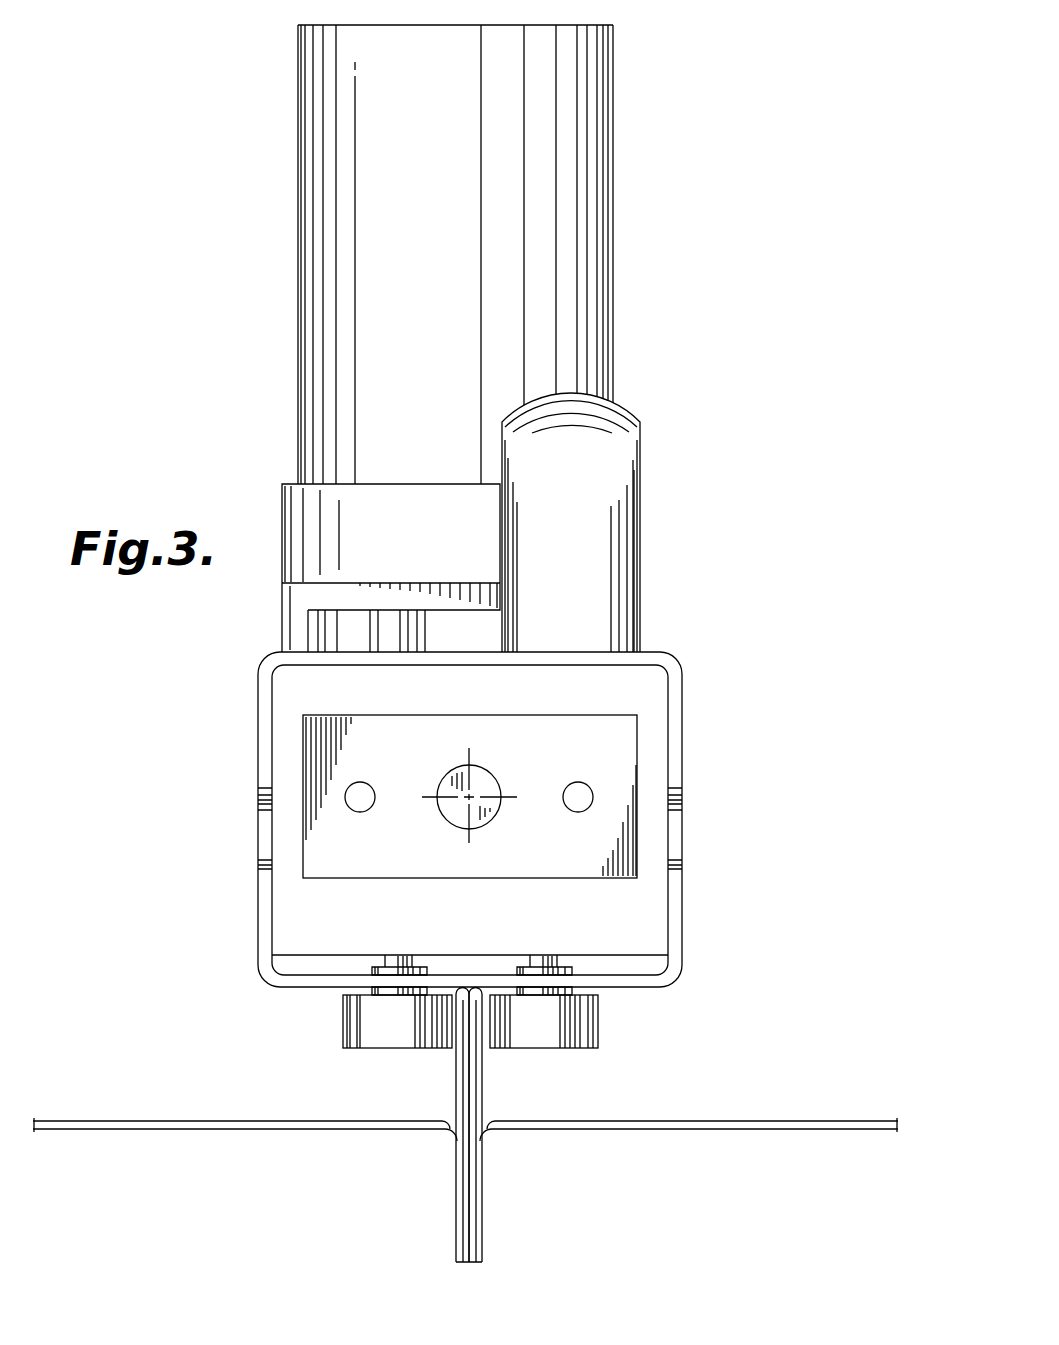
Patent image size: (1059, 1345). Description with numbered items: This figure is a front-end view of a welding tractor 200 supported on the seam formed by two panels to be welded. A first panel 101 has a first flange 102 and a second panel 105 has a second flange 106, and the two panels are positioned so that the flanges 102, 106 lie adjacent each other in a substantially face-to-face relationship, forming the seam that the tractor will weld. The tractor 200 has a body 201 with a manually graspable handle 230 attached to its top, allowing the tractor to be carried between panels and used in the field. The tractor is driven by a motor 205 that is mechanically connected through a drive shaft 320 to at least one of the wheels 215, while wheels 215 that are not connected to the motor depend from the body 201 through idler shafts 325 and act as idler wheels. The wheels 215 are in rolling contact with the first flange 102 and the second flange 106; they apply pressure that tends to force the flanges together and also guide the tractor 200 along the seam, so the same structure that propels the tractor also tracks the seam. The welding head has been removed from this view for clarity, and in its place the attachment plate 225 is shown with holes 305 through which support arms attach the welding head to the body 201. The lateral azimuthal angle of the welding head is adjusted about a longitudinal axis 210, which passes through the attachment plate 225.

The first panel 101 is at (186, 1121).
The first flange 102 is at (440, 1106).
The second panel 105 is at (713, 1121).
The second flange 106 is at (500, 1106).
The welding tractor 200 is at (654, 392).
The tractor body 201 is at (680, 658).
The motor 205 is at (630, 74).
The longitudinal axis 210 is at (472, 800).
The wheels 215 is at (345, 1025).
The attachment plate 225 is at (310, 838).
The handle 230 is at (636, 492).
The holes 305 is at (347, 790).
The drive shaft 320 is at (378, 628).
The idler shafts 325 is at (385, 960).